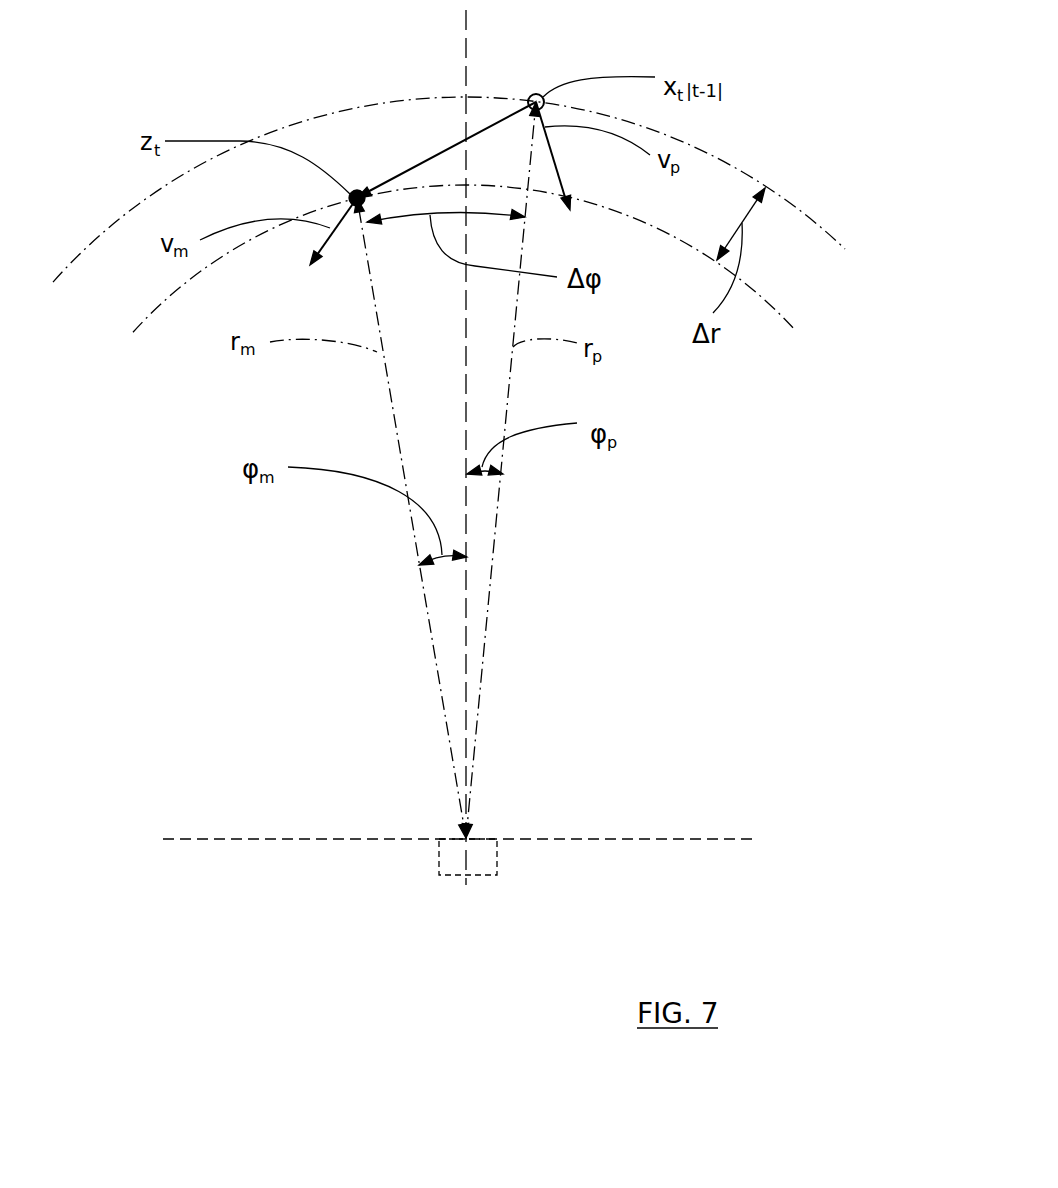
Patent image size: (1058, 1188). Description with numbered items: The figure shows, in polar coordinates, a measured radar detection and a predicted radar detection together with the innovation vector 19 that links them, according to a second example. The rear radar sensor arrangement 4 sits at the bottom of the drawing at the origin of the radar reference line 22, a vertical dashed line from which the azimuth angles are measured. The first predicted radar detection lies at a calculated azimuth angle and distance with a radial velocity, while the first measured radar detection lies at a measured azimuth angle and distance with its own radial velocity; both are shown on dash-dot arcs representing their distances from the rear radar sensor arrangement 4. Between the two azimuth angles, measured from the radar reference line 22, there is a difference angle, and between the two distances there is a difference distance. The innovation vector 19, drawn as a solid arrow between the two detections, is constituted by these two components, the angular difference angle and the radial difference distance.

The innovation vector 19 is at (467, 128).
The radar reference line 22 is at (466, 398).
The rear radar sensor arrangement 4 is at (484, 855).